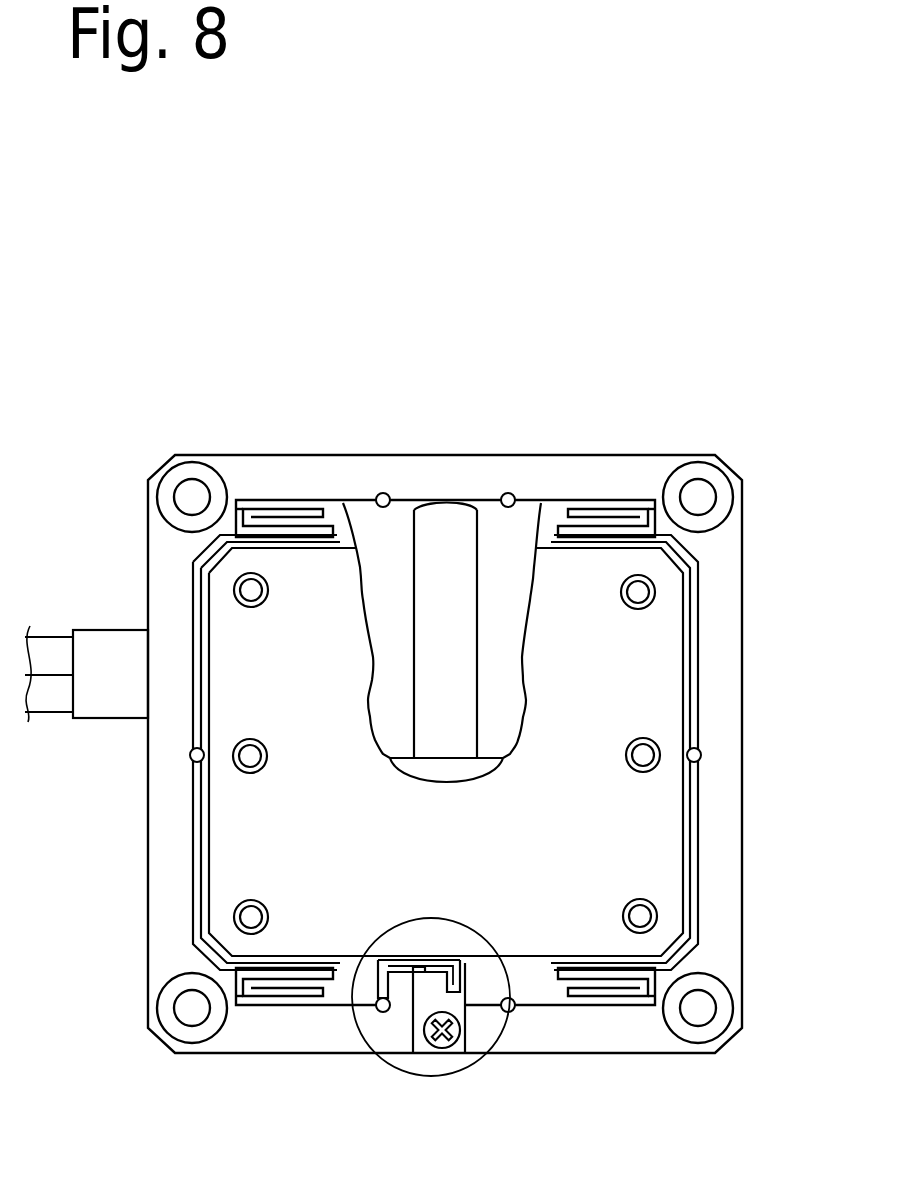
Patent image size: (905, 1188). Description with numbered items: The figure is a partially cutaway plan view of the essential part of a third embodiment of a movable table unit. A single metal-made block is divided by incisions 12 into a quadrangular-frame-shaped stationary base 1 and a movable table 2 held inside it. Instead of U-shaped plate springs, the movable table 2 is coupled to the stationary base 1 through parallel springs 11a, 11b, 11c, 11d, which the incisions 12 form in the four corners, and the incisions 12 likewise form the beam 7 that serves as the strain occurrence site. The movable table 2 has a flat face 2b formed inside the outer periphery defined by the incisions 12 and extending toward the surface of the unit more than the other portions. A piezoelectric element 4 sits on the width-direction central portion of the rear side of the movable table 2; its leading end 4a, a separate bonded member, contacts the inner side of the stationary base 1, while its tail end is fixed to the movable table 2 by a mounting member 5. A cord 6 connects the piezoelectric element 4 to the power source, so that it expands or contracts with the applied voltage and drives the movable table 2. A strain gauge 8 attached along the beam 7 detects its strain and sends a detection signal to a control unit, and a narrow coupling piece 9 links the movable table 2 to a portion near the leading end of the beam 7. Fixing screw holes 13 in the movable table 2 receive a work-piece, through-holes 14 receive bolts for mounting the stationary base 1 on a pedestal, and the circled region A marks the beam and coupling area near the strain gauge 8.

The stationary base 1 is at (319, 457).
The movable table 2 is at (670, 727).
The flat face 2b is at (665, 677).
The piezoelectric element 4 is at (608, 562).
The leading end 4a is at (447, 500).
The mounting member 5 is at (470, 772).
The cord 6 is at (50, 702).
The beam 7 is at (387, 1005).
The strain gauge 8 is at (410, 957).
The coupling piece 9 is at (445, 985).
The parallel spring 11a is at (285, 500).
The parallel spring 11b is at (597, 500).
The parallel spring 11c is at (258, 1006).
The parallel spring 11d is at (625, 1006).
The incisions 12 is at (530, 500).
The fixing screw hole 13 is at (648, 593).
The through-hole 14 is at (188, 490).
The enlarged region A is at (471, 1066).